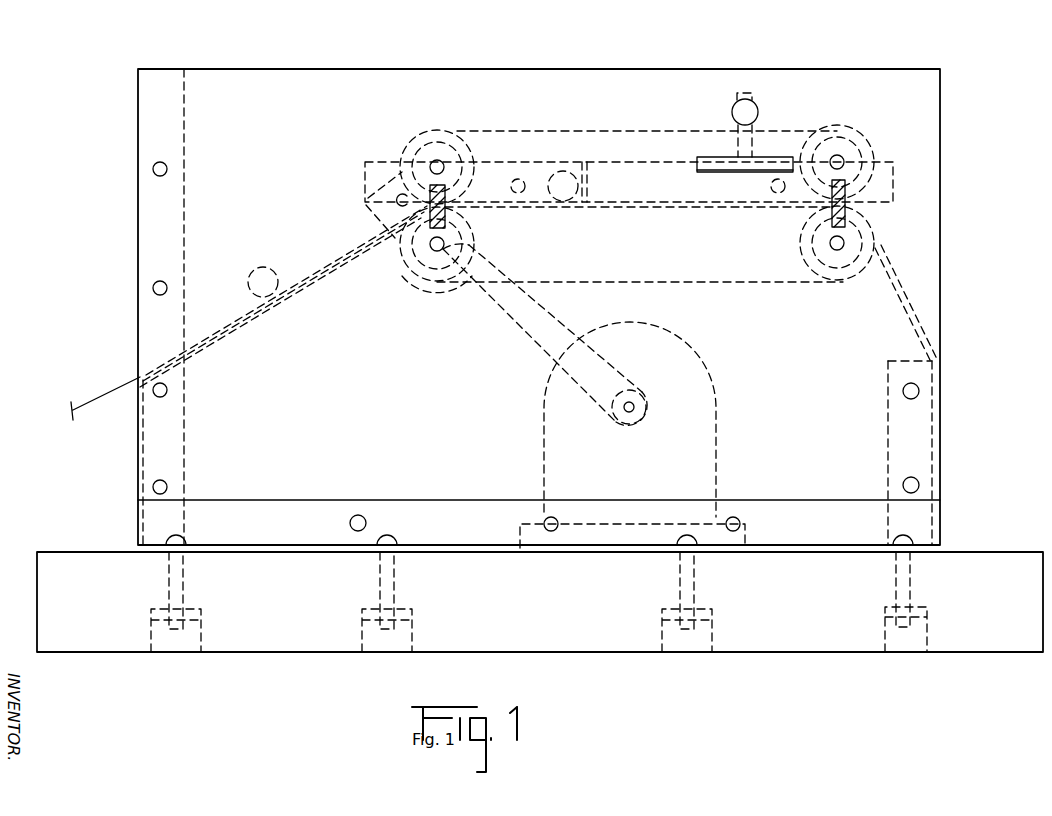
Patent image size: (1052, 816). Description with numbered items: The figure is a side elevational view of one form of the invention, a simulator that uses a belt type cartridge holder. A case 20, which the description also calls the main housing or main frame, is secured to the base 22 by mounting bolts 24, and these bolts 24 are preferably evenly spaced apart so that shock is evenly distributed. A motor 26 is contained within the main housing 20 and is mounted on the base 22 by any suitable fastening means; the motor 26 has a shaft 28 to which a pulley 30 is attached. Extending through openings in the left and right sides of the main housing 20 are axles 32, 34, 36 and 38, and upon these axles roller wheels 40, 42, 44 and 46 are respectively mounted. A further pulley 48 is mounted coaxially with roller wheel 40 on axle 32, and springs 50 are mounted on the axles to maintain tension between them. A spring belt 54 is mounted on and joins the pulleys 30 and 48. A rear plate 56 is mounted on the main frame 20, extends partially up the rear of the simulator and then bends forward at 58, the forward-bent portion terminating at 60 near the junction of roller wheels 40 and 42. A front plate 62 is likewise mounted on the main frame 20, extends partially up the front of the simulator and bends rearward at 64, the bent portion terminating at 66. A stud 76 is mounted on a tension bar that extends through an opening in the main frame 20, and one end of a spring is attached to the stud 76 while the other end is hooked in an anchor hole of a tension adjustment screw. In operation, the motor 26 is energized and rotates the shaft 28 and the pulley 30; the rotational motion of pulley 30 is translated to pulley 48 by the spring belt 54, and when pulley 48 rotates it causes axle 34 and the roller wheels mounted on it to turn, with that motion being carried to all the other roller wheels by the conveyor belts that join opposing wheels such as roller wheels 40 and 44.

The case 20 is at (873, 340).
The base 22 is at (848, 625).
The mounting bolts 24 is at (912, 540).
The motor 26 is at (692, 430).
The shaft 28 is at (629, 425).
The pulley 30 is at (660, 403).
The axle 32 is at (436, 159).
The axle 34 is at (447, 243).
The axle 36 is at (840, 157).
The axle 38 is at (838, 251).
The roller wheel 40 is at (455, 145).
The roller wheel 42 is at (432, 280).
The roller wheel 44 is at (828, 132).
The roller wheel 46 is at (855, 270).
The pulley 48 is at (438, 295).
The springs 50 is at (846, 212).
The spring belt 54 is at (518, 263).
The rear plate 56 is at (143, 447).
The forward bend of rear plate 58 is at (140, 377).
The termination of rear plate portion 60 is at (407, 217).
The front plate 62 is at (940, 404).
The rearward bend of front plate 64 is at (927, 359).
The termination of front plate portion 66 is at (892, 258).
The stud 76 is at (747, 136).